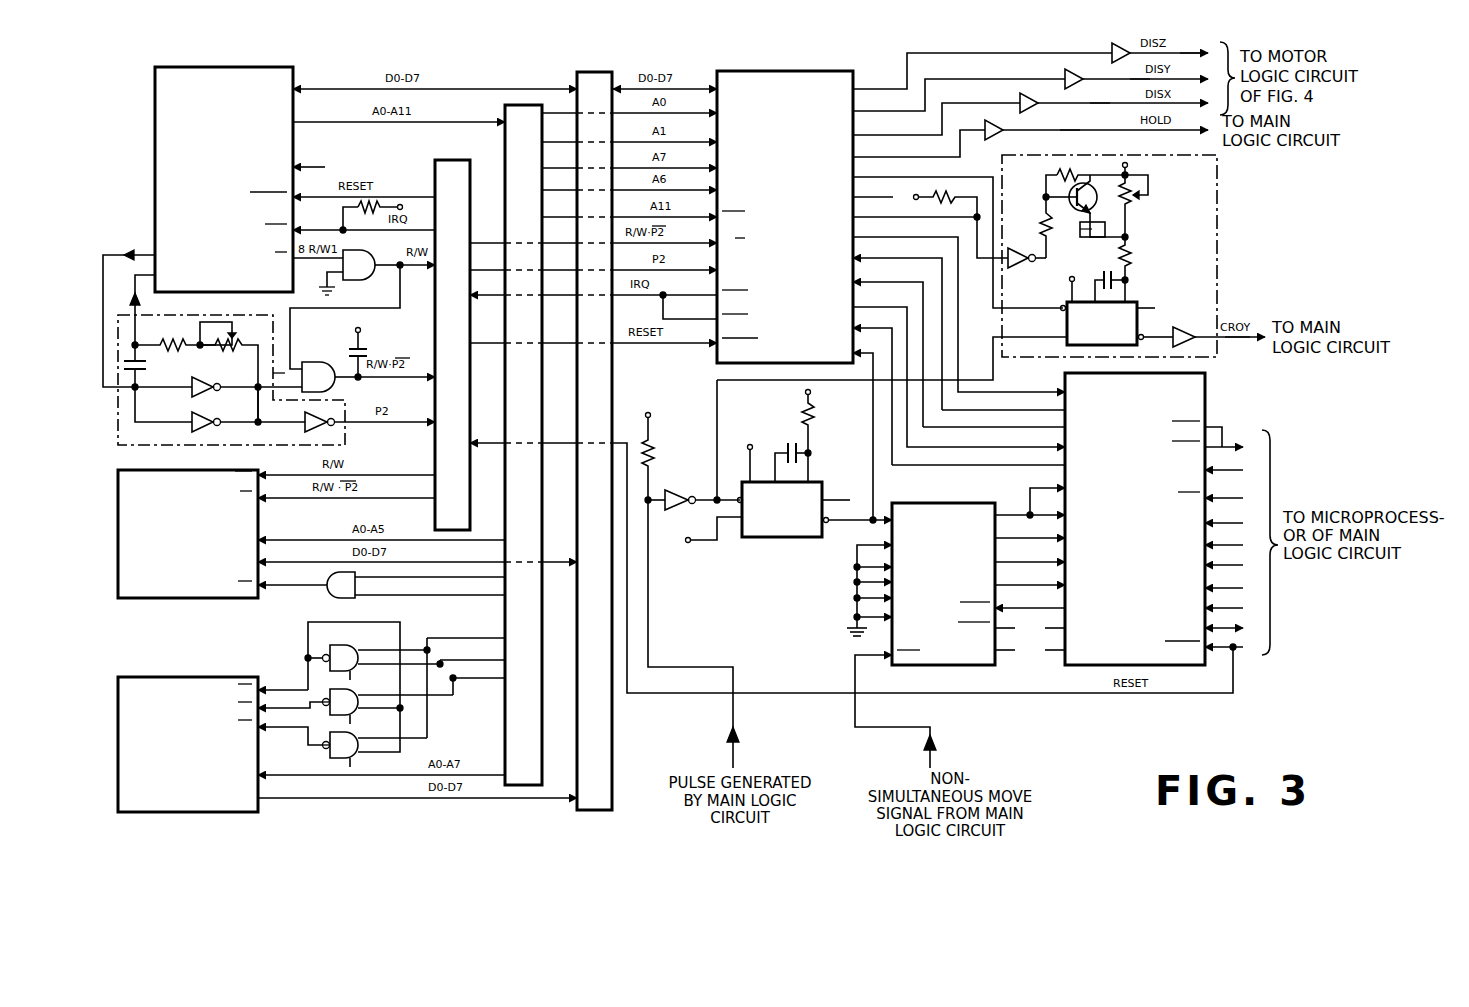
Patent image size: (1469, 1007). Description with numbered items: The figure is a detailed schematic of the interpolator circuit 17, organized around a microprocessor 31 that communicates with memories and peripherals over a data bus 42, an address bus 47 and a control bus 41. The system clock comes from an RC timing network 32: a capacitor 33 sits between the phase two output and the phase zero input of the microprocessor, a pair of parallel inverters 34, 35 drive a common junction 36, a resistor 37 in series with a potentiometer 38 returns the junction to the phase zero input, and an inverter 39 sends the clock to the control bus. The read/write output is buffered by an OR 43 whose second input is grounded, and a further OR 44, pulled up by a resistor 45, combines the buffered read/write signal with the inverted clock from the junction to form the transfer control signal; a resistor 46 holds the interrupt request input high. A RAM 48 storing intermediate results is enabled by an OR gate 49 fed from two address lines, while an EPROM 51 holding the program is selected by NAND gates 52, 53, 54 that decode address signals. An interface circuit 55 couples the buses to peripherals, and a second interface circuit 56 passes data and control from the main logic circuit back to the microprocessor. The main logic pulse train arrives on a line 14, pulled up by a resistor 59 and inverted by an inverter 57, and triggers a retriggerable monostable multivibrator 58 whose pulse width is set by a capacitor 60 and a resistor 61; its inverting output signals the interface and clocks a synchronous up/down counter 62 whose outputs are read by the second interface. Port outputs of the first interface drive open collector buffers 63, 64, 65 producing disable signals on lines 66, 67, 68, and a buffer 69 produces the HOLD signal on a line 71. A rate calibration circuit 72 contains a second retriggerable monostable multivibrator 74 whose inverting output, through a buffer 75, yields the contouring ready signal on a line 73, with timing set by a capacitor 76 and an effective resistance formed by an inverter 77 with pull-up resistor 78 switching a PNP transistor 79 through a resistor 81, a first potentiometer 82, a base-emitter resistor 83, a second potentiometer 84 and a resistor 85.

The interpolator circuit 17 is at (502, 38).
The microprocessor (MPU) 31 is at (186, 180).
The RC timing network 32 is at (118, 432).
The capacitor 33 is at (124, 364).
The inverter 34 is at (217, 371).
The inverter 35 is at (208, 413).
The common junction 36 is at (258, 425).
The resistor 37 is at (167, 334).
The potentiometer 38 is at (230, 370).
The inverter 39 is at (305, 416).
The control bus 41 is at (435, 468).
The data bus 42 is at (612, 738).
The OR gate 43 is at (363, 280).
The OR gate 44 is at (325, 362).
The resistor 45 is at (366, 350).
The resistor 46 is at (373, 215).
The address bus 47 is at (505, 740).
The RAM 48 is at (162, 533).
The OR gate 49 is at (330, 596).
The EPROM 51 is at (160, 740).
The NAND gate 52 is at (343, 640).
The NAND gate 53 is at (330, 700).
The NAND gate 54 is at (330, 752).
The interface circuit (PIA) 55 is at (792, 210).
The interface circuit (PIA) 56 is at (1136, 511).
The inverter 57 is at (680, 490).
The retriggerable monostable multivibrator 58 is at (784, 533).
The resistor 59 is at (652, 438).
The capacitor 60 is at (787, 443).
The resistor 61 is at (815, 414).
The synchronous up/down counter 62 is at (944, 583).
The open collector buffer 63 is at (1108, 50).
The open collector buffer 64 is at (1063, 74).
The open collector buffer 65 is at (1015, 98).
The line 66 is at (1182, 50).
The line 67 is at (1135, 80).
The line 68 is at (1095, 104).
The open collector buffer 69 is at (983, 125).
The line 71 is at (1066, 131).
The rate calibration circuit 72 is at (1218, 232).
The line 73 is at (1240, 340).
The retriggerable monostable multivibrator 74 is at (1105, 343).
The open collector buffer 75 is at (1185, 328).
The capacitor 76 is at (1128, 278).
The inverter 77 is at (1020, 268).
The resistor 78 is at (950, 194).
The PNP transistor 79 is at (1095, 183).
The resistor 81 is at (1043, 226).
The first potentiometer 82 is at (1088, 237).
The resistor 83 is at (1052, 170).
The second potentiometer 84 is at (1137, 200).
The resistor 85 is at (1134, 258).
The line 14 is at (733, 722).